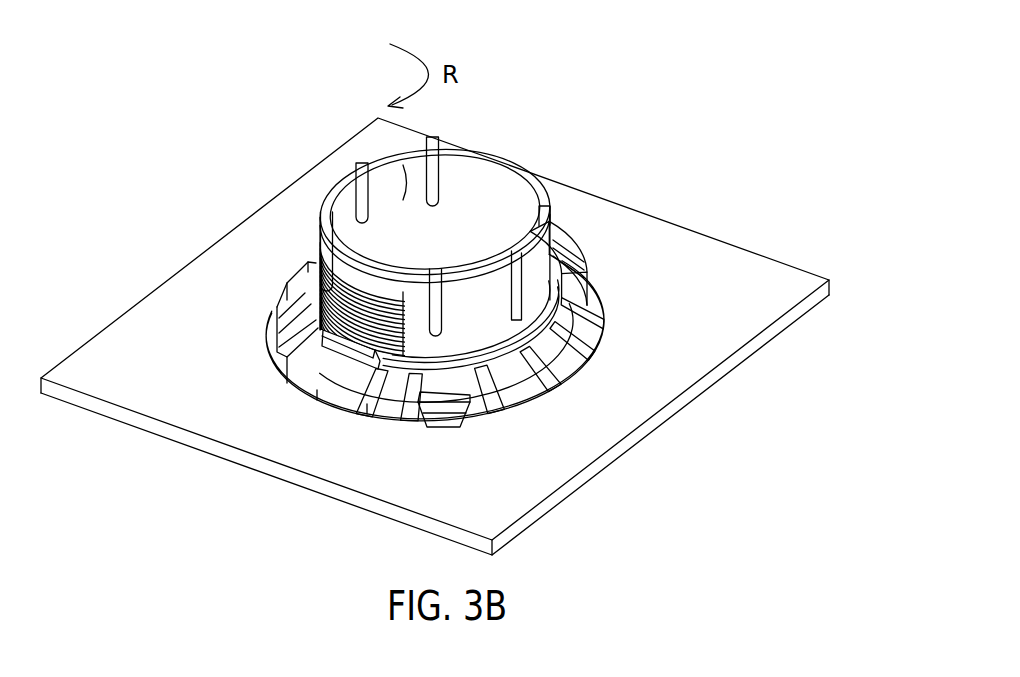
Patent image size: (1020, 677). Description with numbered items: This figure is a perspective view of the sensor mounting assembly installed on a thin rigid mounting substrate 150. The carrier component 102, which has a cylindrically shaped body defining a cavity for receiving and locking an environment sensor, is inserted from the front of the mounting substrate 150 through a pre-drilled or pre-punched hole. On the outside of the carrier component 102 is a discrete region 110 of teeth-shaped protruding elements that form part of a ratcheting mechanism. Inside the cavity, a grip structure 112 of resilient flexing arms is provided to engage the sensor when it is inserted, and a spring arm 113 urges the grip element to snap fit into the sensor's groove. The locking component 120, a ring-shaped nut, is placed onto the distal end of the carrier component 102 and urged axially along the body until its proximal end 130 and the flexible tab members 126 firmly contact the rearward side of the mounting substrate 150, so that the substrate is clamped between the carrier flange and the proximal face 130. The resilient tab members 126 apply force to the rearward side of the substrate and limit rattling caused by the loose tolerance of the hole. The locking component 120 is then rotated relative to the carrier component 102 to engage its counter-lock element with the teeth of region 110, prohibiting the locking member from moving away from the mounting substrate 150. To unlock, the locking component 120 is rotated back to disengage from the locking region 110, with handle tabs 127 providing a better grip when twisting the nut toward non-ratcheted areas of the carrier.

The carrier component 102 is at (527, 172).
The discrete region of protruding elements 110 is at (357, 292).
The grip structure 112 is at (400, 168).
The spring arm 113 is at (387, 188).
The locking component 120 is at (278, 325).
The flexible tab members 126 is at (443, 418).
The handle tabs 127 is at (287, 375).
The proximal end 130 is at (552, 396).
The mounting substrate 150 is at (708, 233).